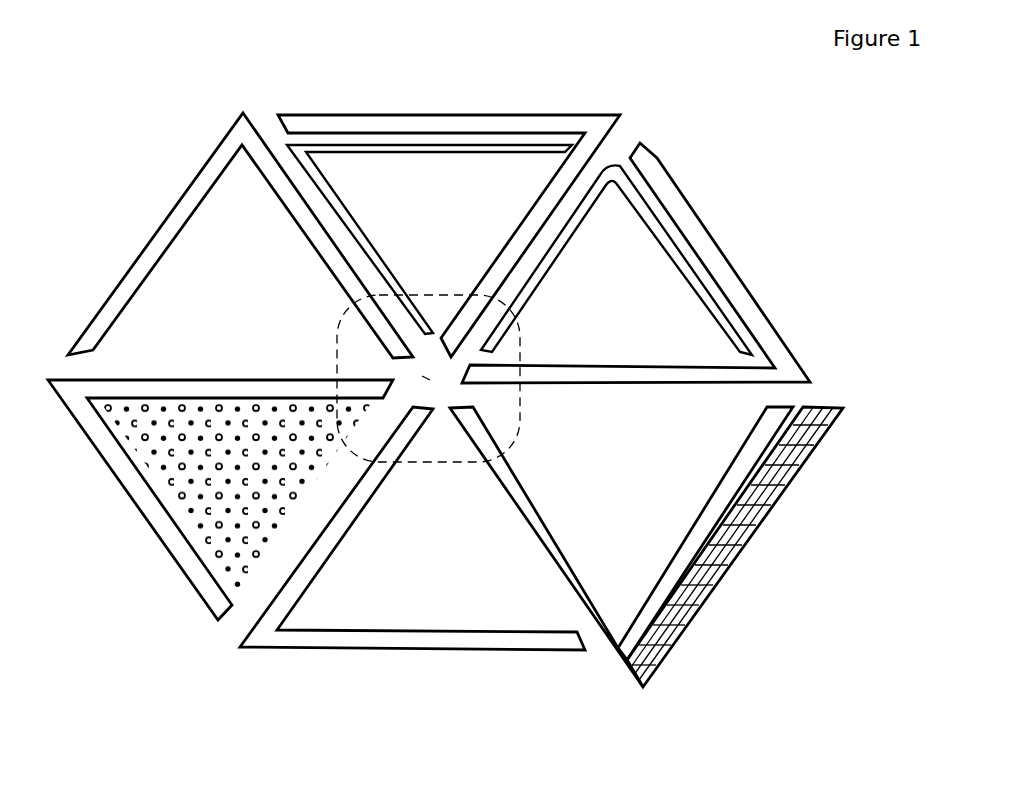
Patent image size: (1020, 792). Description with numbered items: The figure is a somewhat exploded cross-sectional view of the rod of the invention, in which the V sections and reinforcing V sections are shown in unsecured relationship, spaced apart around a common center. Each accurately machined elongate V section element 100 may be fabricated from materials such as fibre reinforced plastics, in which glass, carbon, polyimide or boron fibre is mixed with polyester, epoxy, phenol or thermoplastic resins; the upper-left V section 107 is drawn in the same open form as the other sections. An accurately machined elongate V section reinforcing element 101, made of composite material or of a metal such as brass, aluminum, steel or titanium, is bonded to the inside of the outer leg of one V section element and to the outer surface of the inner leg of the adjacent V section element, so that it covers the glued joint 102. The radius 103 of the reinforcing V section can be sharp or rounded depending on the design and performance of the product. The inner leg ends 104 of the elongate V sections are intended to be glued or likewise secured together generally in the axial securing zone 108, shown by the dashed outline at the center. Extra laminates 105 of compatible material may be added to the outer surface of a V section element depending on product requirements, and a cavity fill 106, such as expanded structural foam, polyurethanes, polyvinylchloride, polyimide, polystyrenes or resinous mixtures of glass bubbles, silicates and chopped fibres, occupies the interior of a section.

The elongate V section element 100 is at (332, 126).
The elongate V section reinforcing element 101 is at (440, 150).
The glued joint 102 is at (625, 133).
The radius 103 is at (617, 172).
The inner leg ends 104 is at (425, 378).
The extra laminates 105 is at (753, 532).
The cavity fill 106 is at (255, 474).
The upper left chevron frame 107 is at (264, 110).
The axial securing zone 108 is at (335, 347).